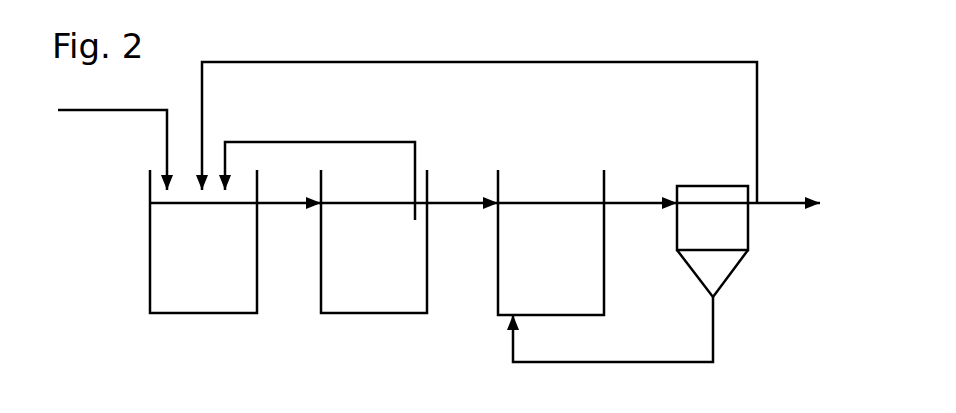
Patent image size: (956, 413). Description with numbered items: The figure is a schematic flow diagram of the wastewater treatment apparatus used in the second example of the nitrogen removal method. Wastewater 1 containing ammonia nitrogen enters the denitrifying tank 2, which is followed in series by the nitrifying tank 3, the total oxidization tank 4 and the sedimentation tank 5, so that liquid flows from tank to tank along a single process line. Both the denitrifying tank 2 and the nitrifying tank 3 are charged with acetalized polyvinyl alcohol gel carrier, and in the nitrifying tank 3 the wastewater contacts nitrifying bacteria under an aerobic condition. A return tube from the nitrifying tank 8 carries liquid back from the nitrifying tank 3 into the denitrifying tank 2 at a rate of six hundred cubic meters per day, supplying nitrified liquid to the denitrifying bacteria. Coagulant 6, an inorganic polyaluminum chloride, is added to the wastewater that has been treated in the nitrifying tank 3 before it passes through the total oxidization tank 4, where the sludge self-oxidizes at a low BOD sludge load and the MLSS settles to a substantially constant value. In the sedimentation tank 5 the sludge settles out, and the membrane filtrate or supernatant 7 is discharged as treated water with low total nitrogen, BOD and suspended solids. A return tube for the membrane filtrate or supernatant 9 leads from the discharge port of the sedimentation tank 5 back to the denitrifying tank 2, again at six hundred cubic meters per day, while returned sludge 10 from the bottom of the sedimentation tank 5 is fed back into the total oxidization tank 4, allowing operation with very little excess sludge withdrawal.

The wastewater 1 is at (126, 111).
The denitrifying tank 2 is at (232, 315).
The nitrifying tank 3 is at (407, 315).
The total oxidization tank 4 is at (506, 310).
The sedimentation tank 5 is at (751, 245).
The coagulant 6 is at (520, 203).
The membrane filtrate or supernatant 7 is at (765, 196).
The return tube from the nitrifying tank 8 is at (256, 140).
The return tube for the membrane filtrate or supernatant 9 is at (232, 62).
The returned sludge 10 is at (613, 330).